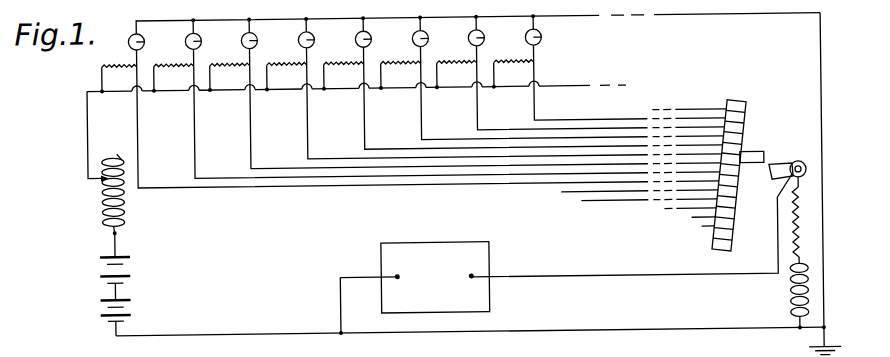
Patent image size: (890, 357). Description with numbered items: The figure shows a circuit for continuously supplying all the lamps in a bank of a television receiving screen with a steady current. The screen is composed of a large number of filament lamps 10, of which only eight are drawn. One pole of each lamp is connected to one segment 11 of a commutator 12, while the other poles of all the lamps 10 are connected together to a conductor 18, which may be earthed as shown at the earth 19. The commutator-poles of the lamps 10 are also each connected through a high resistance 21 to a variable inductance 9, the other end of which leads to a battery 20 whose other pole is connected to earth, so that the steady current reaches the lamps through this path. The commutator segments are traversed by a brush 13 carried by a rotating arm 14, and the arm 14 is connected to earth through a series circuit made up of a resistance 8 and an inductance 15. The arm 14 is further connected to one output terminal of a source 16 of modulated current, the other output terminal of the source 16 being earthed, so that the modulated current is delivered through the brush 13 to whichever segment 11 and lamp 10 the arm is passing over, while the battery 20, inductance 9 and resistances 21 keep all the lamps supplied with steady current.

The resistance 8 is at (796, 231).
The variable inductance 9 is at (123, 211).
The filament lamps 10 is at (186, 42).
The segment 11 is at (734, 225).
The commutator 12 is at (733, 105).
The brush 13 is at (748, 158).
The rotating arm 14 is at (781, 173).
The inductance 15 is at (788, 296).
The source of modulated current 16 is at (414, 266).
The conductor 18 is at (821, 76).
The earth 19 is at (807, 356).
The battery 20 is at (125, 277).
The high resistance 21 is at (106, 67).